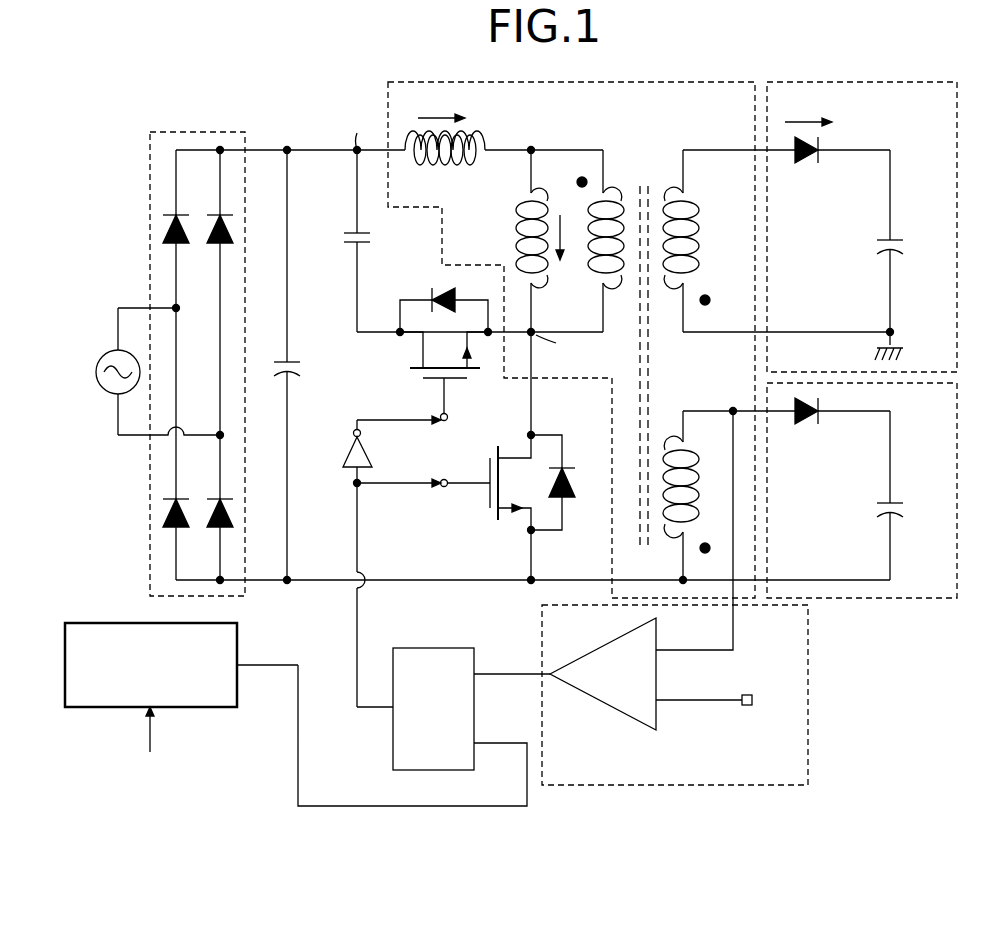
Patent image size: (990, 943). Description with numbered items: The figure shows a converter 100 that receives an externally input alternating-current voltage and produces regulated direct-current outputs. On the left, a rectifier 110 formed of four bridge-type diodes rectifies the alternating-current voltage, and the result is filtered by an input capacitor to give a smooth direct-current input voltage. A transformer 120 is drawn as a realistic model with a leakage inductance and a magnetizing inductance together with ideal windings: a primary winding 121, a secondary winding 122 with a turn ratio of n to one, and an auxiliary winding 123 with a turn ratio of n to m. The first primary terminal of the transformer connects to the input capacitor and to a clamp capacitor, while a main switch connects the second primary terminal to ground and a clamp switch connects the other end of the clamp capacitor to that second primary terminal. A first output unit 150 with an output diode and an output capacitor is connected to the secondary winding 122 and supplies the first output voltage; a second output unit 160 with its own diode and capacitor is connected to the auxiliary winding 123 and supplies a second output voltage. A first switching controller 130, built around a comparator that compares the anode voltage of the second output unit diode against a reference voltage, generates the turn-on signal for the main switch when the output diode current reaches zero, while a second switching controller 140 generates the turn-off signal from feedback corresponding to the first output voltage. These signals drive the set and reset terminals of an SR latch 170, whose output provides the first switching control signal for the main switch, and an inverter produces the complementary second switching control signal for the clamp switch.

The converter 100 is at (345, 58).
The rectifier 110 is at (196, 132).
The transformer 120 is at (651, 80).
The primary winding 121 is at (598, 198).
The secondary winding 122 is at (693, 194).
The auxiliary winding 123 is at (672, 440).
The first switching controller 130 is at (810, 700).
The second switching controller 140 is at (65, 665).
The first output unit 150 is at (859, 80).
The second output unit 160 is at (900, 600).
The SR latch 170 is at (393, 745).